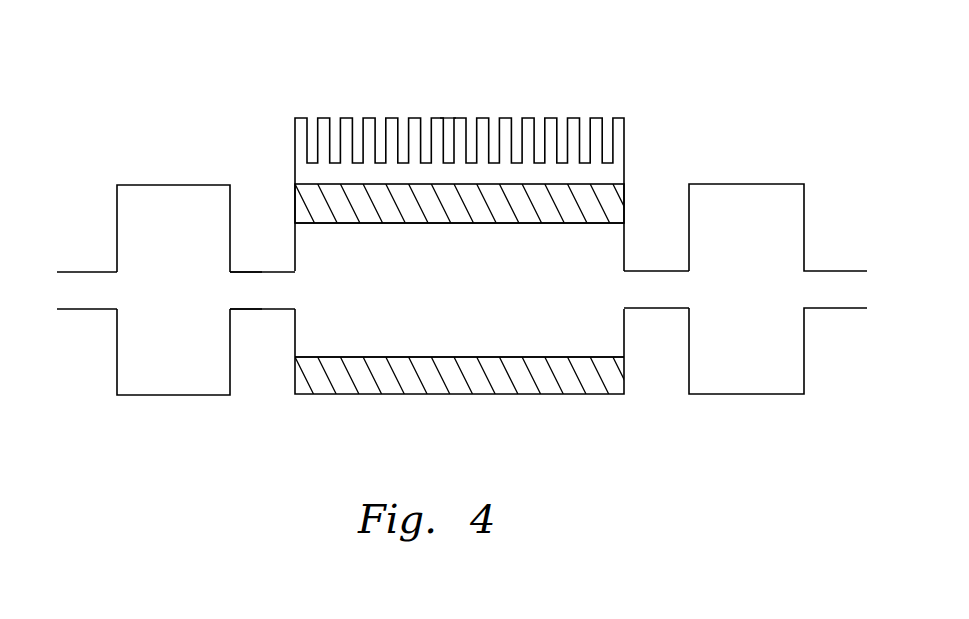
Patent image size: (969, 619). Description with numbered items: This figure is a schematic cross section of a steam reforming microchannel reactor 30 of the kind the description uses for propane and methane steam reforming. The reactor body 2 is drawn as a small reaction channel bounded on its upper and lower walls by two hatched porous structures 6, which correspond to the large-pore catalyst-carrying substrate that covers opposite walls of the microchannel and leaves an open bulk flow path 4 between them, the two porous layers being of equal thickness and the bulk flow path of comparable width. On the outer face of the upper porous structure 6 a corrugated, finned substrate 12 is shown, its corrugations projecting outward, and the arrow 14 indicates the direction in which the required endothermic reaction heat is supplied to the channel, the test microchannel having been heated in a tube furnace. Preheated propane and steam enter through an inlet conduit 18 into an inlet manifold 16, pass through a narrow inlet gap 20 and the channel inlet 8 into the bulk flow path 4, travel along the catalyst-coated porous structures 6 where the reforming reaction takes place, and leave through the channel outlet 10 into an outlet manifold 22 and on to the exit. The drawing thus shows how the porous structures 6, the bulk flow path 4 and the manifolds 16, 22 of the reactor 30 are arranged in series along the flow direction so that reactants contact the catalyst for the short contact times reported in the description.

The heat exchanger body 2 is at (546, 404).
The fluid channel 4 is at (408, 322).
The heat transfer wall layer 6 is at (615, 212).
The channel inlet 8 is at (280, 290).
The channel outlet 10 is at (635, 292).
The finned heat sink plate 12 is at (307, 173).
The air flow direction 14 is at (448, 118).
The inlet manifold 16 is at (172, 198).
The inlet conduit 18 is at (78, 300).
The inlet gap 20 is at (230, 290).
The outlet manifold 22 is at (728, 378).
The heat exchanger assembly 30 is at (279, 428).